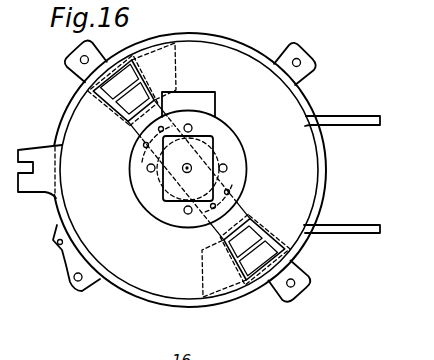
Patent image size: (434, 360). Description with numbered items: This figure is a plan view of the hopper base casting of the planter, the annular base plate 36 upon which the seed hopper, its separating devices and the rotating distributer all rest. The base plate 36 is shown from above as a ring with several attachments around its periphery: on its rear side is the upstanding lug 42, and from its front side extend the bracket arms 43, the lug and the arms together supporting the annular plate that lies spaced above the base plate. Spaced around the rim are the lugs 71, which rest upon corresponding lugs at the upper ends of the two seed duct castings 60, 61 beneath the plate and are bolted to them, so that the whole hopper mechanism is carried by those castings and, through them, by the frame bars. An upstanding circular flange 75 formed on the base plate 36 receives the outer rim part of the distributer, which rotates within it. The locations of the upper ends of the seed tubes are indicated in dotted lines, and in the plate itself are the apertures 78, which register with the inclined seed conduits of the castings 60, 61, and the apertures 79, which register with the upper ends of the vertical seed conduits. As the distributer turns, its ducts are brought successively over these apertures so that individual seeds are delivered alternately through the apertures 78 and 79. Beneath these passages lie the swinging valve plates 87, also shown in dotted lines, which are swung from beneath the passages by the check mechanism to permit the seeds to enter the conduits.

The annular base plate 36 is at (61, 131).
The upstanding lug 42 is at (42, 190).
The bracket arms 43 is at (365, 124).
The seed duct casting 60 is at (131, 131).
The seed duct casting 61 is at (250, 200).
The lugs 71 is at (79, 64).
The upstanding circular flange 75 is at (149, 302).
The apertures 78 is at (158, 88).
The apertures 79 is at (110, 104).
The swinging valve plates 87 is at (180, 48).